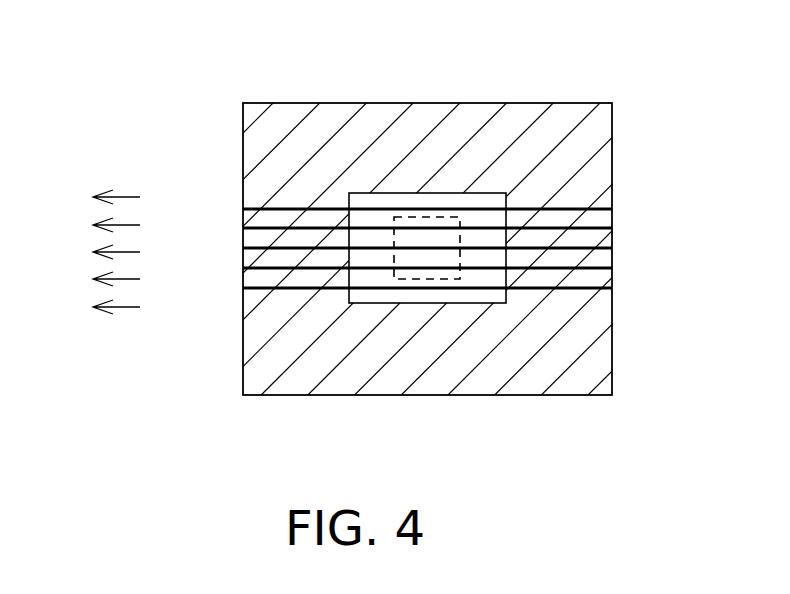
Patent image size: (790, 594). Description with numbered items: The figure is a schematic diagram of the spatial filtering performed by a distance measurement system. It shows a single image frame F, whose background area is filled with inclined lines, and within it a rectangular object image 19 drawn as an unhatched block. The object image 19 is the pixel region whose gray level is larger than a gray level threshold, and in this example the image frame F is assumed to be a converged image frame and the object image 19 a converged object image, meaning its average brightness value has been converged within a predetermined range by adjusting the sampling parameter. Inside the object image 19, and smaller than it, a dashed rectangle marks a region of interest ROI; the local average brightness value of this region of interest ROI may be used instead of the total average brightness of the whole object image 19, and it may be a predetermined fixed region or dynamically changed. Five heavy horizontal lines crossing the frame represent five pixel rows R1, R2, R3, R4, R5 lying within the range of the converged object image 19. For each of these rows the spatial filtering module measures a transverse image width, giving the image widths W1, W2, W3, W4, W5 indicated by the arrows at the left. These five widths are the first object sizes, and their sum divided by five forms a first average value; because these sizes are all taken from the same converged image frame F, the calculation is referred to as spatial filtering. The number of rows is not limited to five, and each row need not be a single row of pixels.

The image frame F is at (612, 158).
The object image 19 is at (367, 193).
The region of interest ROI is at (405, 281).
The pixel row R1 is at (243, 209).
The pixel row R2 is at (243, 228).
The pixel row R3 is at (243, 248).
The pixel row R4 is at (243, 268).
The pixel row R5 is at (243, 288).
The image width W1 is at (91, 198).
The image width W2 is at (91, 226).
The image width W3 is at (91, 253).
The image width W4 is at (91, 280).
The image width W5 is at (91, 308).